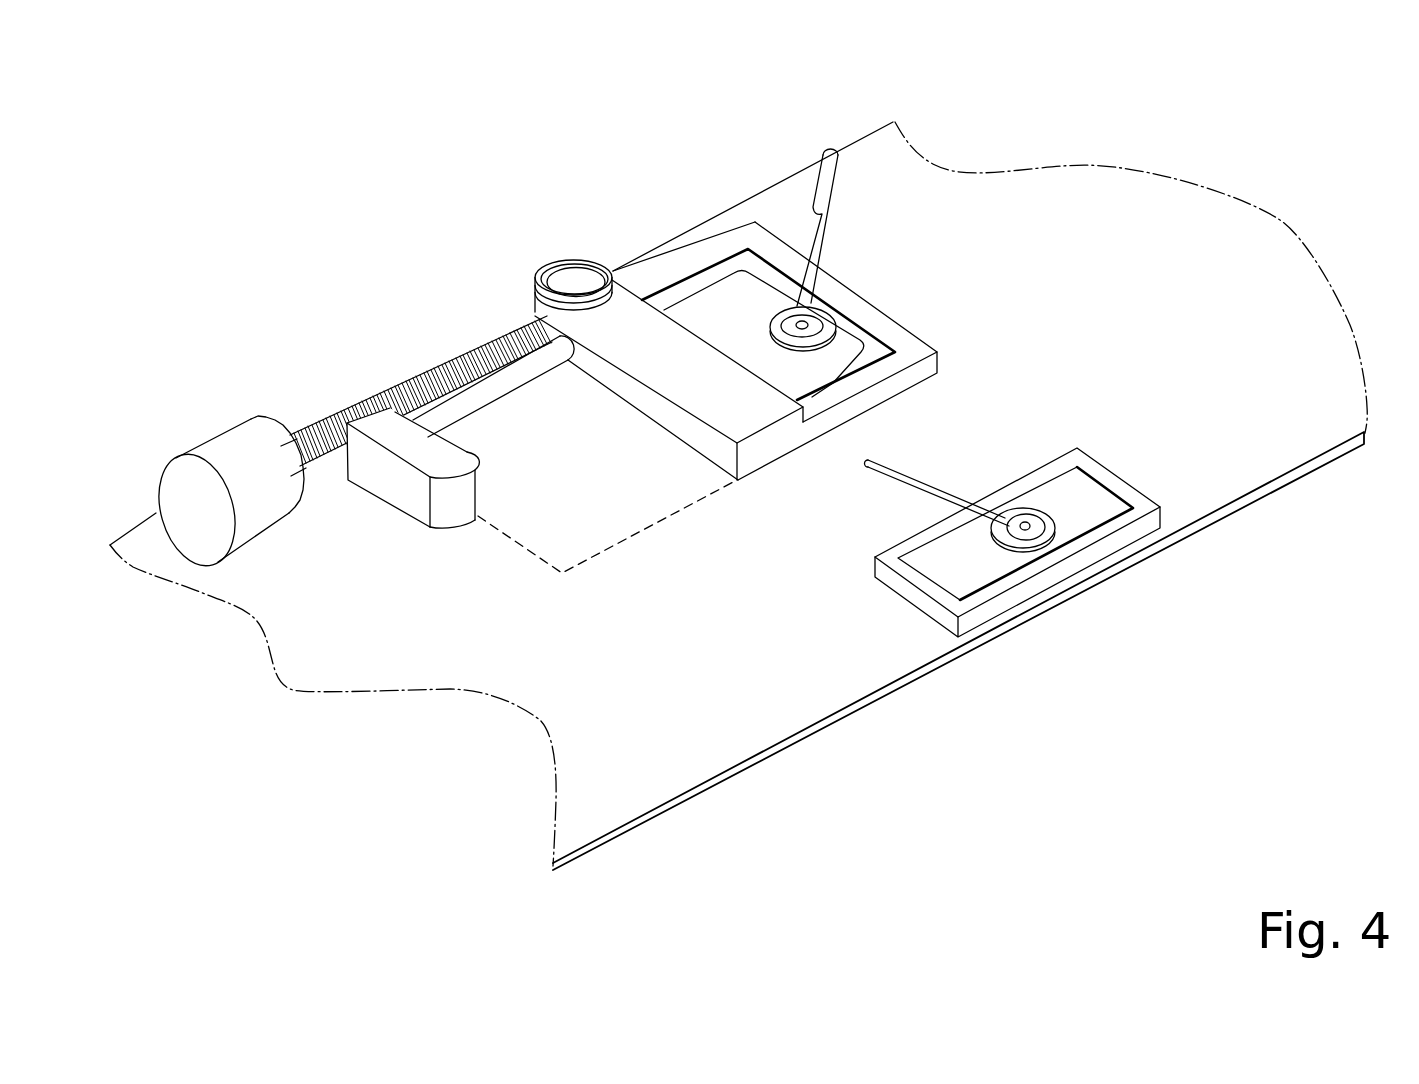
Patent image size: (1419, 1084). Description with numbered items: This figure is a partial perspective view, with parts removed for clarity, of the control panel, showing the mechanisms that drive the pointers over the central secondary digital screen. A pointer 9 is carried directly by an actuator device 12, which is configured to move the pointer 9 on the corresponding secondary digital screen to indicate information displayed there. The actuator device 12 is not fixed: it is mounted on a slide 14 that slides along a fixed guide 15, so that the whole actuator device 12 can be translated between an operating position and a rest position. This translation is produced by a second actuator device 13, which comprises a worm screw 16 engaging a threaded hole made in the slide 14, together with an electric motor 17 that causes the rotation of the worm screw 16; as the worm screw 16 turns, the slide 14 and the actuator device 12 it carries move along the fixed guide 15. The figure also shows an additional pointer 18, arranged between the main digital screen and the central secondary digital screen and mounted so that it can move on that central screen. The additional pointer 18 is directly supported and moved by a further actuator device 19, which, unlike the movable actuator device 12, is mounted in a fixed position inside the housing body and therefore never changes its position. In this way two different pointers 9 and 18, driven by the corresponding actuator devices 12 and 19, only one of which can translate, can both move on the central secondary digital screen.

The pointer 9 is at (822, 192).
The actuator device 12 is at (703, 312).
The actuator device 13 is at (466, 270).
The slide 14 is at (607, 330).
The fixed guide 15 is at (663, 518).
The worm screw 16 is at (410, 375).
The electric motor 17 is at (222, 475).
The additional pointer 18 is at (913, 477).
The actuator device 19 is at (985, 598).